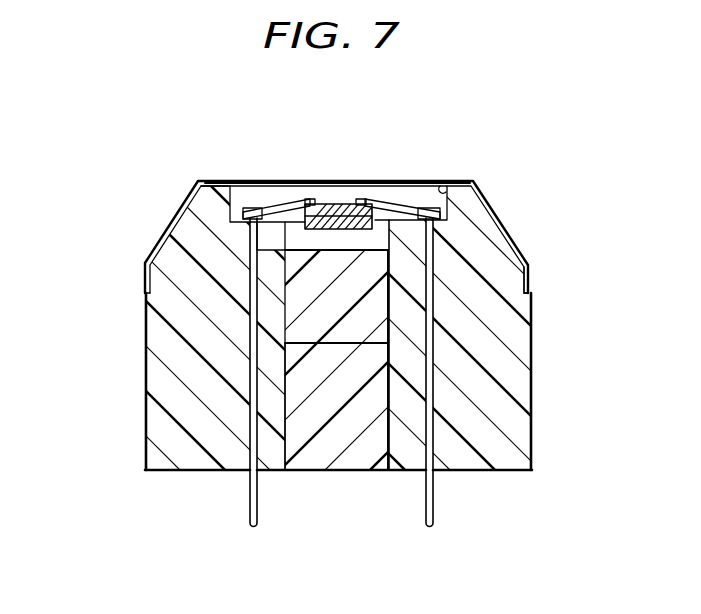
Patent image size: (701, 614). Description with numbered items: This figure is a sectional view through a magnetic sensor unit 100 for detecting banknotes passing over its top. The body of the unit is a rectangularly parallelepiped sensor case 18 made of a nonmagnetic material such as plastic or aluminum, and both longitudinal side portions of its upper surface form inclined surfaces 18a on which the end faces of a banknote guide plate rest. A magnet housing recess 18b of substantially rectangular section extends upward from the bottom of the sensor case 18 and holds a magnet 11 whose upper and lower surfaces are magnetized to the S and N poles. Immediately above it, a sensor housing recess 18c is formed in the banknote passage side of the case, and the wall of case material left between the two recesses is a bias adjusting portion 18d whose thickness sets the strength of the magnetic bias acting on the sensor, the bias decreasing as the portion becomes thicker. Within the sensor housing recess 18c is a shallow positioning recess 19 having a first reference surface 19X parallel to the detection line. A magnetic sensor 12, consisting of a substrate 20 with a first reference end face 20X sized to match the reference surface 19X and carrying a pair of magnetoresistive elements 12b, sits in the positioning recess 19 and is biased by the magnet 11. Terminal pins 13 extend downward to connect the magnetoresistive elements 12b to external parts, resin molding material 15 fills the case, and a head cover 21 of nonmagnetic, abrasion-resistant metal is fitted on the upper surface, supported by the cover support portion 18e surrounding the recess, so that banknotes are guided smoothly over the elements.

The semiconductor device / package 100 is at (124, 157).
The magnet 11 is at (333, 320).
The magnetic sensor 12 is at (382, 186).
The magnetoresistive element 12b is at (327, 204).
The terminal pin 13 is at (248, 521).
The resin molding material 15 is at (365, 443).
The sensor case 18 is at (152, 440).
The inclined surface 18a is at (176, 214).
The magnet housing recess 18b is at (293, 450).
The sensor housing recess 18c is at (448, 196).
The bias adjusting portion 18d is at (278, 242).
The cover support portion 18e is at (218, 182).
The positioning recess 19 is at (378, 203).
The first reference surface 19X is at (316, 203).
The substrate 20 is at (345, 204).
The first reference end face 20X is at (306, 204).
The head cover 21 is at (531, 283).